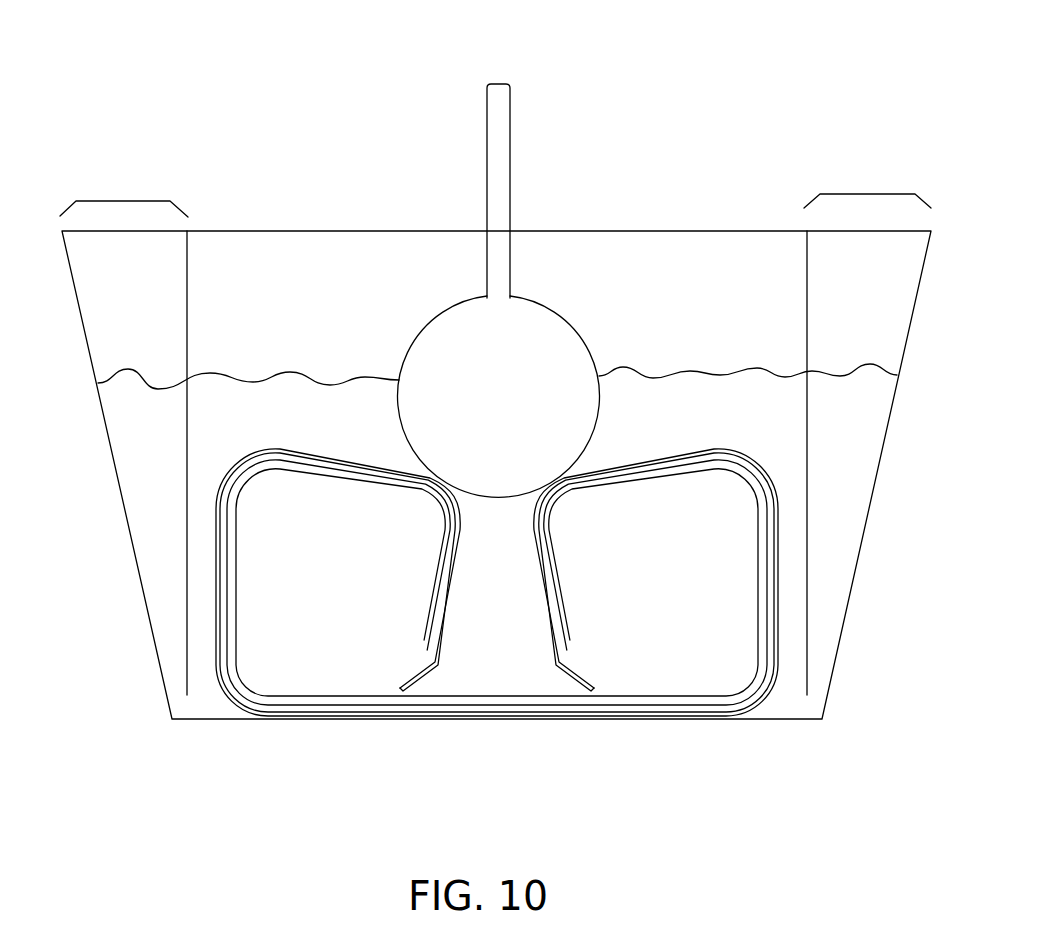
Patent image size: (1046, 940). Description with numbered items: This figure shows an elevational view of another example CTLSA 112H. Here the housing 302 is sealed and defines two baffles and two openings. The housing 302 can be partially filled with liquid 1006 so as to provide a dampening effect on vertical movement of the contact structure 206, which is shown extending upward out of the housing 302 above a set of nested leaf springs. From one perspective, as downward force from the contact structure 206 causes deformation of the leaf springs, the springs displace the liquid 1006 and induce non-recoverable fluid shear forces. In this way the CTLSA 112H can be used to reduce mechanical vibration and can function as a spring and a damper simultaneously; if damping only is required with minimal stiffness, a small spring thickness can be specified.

The CTLSA 112H is at (645, 108).
The housing 302 is at (220, 723).
The contact structure 206 is at (556, 313).
The liquid 1006 is at (357, 431).